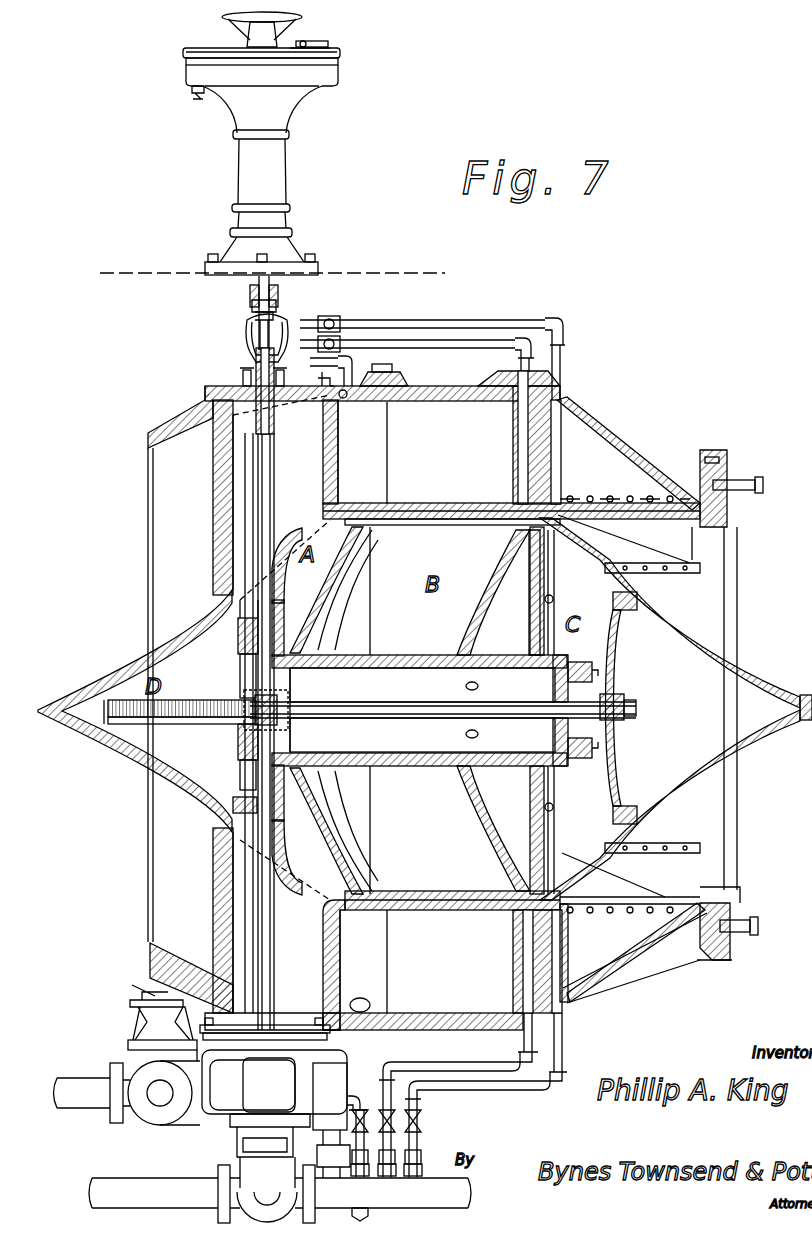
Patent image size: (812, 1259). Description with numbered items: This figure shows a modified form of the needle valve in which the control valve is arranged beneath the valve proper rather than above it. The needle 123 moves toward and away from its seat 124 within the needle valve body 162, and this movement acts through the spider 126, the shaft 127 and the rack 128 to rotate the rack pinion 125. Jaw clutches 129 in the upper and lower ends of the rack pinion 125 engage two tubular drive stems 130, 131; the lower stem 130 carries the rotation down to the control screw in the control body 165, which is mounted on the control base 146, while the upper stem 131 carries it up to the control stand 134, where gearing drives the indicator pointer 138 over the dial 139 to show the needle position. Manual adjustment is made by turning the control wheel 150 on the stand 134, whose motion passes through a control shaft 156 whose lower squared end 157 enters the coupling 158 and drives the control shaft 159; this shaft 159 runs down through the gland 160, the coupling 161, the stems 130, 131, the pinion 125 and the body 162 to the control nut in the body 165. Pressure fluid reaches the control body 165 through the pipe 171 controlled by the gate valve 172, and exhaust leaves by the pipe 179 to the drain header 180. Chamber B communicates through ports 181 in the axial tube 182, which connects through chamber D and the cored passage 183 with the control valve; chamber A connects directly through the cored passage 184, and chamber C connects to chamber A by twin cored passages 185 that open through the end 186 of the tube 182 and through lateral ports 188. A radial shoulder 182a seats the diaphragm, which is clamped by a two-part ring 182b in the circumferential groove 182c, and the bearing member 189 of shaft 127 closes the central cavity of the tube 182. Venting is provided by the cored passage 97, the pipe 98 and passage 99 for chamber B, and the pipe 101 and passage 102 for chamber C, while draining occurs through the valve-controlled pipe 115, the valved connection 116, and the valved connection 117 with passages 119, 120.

The cored passage 97 is at (345, 398).
The pipe 98 is at (460, 348).
The passage 99 is at (515, 440).
The pipe 101 is at (447, 330).
The passage 102 is at (560, 480).
The valve-controlled pipe 115 is at (336, 1127).
The valved connection 116 is at (565, 1038).
The valved connection 117 is at (512, 1042).
The passage 119 is at (512, 968).
The passage 120 is at (568, 940).
The needle 123 is at (462, 891).
The seat 124 is at (712, 887).
The rack pinion 125 is at (318, 670).
The spider 126 is at (606, 748).
The shaft 127 is at (612, 700).
The rack 128 is at (198, 720).
The jaw clutches 129 is at (240, 668).
The tubular drive stem 130 is at (265, 918).
The tubular drive stem 131 is at (250, 290).
The control stand 134 is at (277, 180).
The indicator pointer 138 is at (328, 42).
The dial 139 is at (330, 48).
The control base 146 is at (210, 1038).
The control wheel 150 is at (300, 17).
The control shaft 156 is at (278, 290).
The lower squared end 157 is at (252, 305).
The coupling 158 is at (276, 306).
The control shaft 159 is at (258, 340).
The gland 160 is at (258, 360).
The coupling 161 is at (247, 330).
The needle valve body 162 is at (243, 432).
The control body 165 is at (233, 1108).
The pipe 171 is at (90, 1100).
The gate valve 172 is at (140, 1050).
The pipe 179 is at (235, 1165).
The drain header 180 is at (130, 1185).
The ports 181 is at (470, 668).
The axial tube 182 is at (405, 768).
The radial shoulder 182a is at (475, 645).
The two-part ring 182b is at (570, 596).
The circumferential groove 182c is at (545, 645).
The cored passage 183 is at (240, 872).
The cored passage 184 is at (310, 960).
The twin cored passages 185 is at (382, 700).
The end 186 is at (578, 760).
The lateral ports 188 is at (292, 728).
The bearing member 189 is at (608, 680).